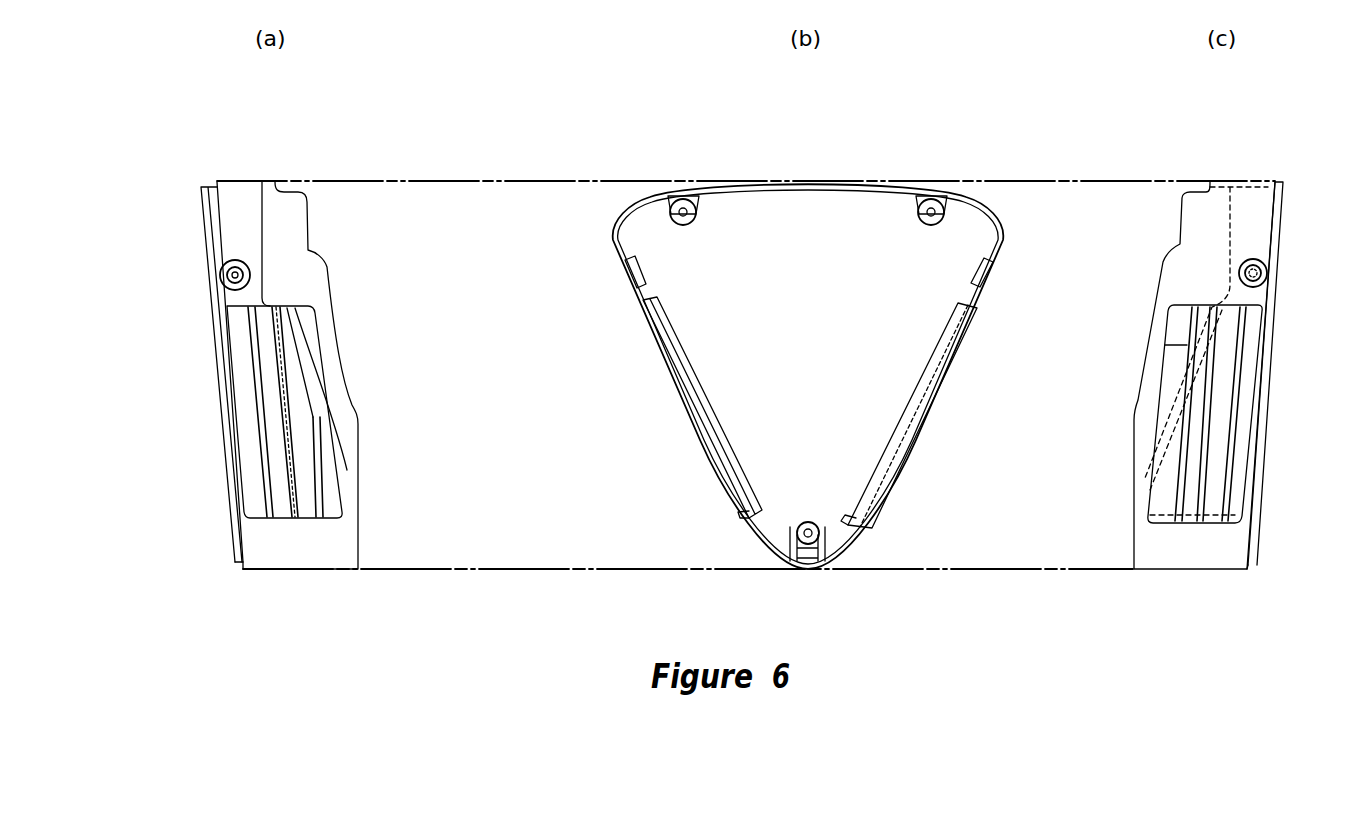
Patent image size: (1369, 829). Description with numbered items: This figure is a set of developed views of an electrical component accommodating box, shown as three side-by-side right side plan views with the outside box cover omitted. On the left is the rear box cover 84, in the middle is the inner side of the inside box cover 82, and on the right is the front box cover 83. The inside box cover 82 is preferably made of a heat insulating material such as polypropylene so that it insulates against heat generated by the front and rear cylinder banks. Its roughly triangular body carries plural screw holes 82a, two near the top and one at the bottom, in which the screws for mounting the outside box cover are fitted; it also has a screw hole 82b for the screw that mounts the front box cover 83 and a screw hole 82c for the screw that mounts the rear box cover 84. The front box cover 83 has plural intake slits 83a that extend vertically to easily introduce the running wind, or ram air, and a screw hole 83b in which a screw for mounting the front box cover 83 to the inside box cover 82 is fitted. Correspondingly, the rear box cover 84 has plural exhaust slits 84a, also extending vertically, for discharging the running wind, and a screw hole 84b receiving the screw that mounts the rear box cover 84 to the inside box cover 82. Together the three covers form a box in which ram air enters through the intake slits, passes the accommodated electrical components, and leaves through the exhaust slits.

The inside box cover 82 is at (820, 210).
The screw holes 82a is at (690, 197).
The screw hole 82b is at (996, 268).
The screw hole 82c is at (627, 270).
The front box cover 83 is at (1252, 197).
The intake slits 83a is at (1180, 453).
The screw hole 83b is at (1258, 268).
The rear box cover 84 is at (233, 197).
The exhaust slits 84a is at (262, 442).
The screw hole 84b is at (228, 280).